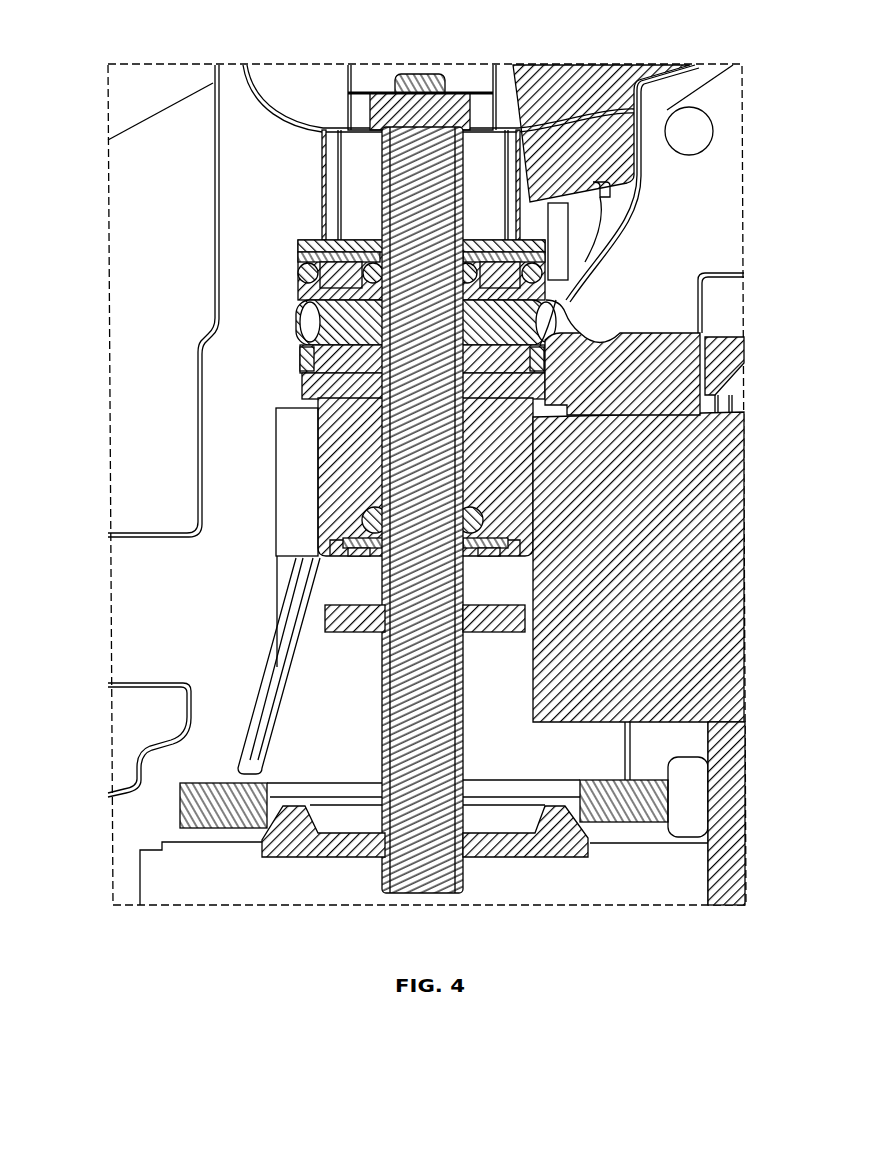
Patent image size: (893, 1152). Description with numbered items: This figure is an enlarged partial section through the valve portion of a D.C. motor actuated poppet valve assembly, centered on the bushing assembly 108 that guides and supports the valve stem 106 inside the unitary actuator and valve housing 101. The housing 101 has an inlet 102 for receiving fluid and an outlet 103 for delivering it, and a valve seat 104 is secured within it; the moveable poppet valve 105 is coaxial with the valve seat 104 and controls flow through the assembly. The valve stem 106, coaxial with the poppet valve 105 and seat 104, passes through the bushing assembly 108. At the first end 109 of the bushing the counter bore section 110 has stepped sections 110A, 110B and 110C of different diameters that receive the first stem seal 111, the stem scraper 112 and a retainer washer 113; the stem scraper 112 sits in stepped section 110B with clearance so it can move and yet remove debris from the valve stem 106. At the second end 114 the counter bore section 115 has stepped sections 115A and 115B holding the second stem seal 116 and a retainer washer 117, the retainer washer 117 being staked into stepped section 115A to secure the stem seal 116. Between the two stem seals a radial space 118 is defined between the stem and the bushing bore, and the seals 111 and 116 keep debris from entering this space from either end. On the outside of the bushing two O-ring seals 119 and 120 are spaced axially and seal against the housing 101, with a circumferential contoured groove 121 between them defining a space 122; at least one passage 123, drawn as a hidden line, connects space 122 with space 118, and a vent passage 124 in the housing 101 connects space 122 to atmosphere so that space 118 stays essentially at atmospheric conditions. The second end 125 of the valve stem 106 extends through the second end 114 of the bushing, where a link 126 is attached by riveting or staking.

The valve housing 101 is at (197, 393).
The inlet 102 is at (577, 874).
The outlet 103 is at (752, 670).
The valve seat 104 is at (652, 797).
The poppet valve 105 is at (322, 845).
The valve stem 106 is at (257, 700).
The bushing assembly 108 is at (318, 443).
The first end 109 is at (398, 668).
The counter bore section 110 is at (360, 522).
The stepped section 110A is at (353, 536).
The stepped section 110B is at (340, 548).
The stepped section 110C is at (325, 565).
The first stem seal 111 is at (480, 520).
The stem scraper 112 is at (490, 540).
The retainer washer 113 is at (488, 548).
The second end 114 is at (540, 228).
The counter bore section 115 is at (534, 234).
The stepped section 115A is at (335, 250).
The stepped section 115B is at (355, 262).
The second stem seal 116 is at (372, 256).
The retainer washer 117 is at (534, 236).
The radial space 118 is at (460, 432).
The O-ring seal 119 is at (293, 360).
The O-ring seal 120 is at (293, 277).
The circumferential contoured groove 121 is at (540, 313).
The space 122 is at (293, 308).
The passage 123 is at (427, 297).
The vent passage 124 is at (563, 322).
The second end 125 is at (434, 142).
The link 126 is at (378, 92).